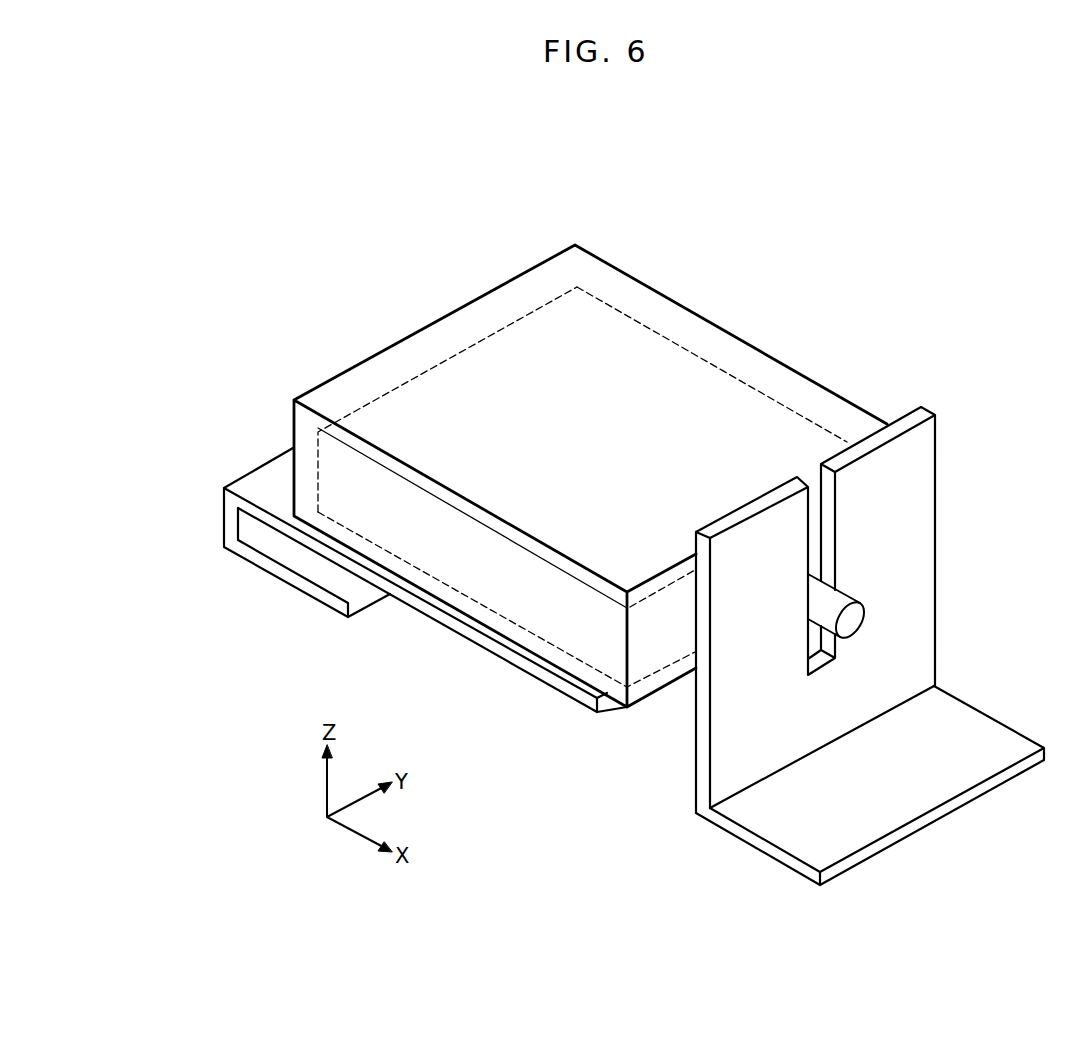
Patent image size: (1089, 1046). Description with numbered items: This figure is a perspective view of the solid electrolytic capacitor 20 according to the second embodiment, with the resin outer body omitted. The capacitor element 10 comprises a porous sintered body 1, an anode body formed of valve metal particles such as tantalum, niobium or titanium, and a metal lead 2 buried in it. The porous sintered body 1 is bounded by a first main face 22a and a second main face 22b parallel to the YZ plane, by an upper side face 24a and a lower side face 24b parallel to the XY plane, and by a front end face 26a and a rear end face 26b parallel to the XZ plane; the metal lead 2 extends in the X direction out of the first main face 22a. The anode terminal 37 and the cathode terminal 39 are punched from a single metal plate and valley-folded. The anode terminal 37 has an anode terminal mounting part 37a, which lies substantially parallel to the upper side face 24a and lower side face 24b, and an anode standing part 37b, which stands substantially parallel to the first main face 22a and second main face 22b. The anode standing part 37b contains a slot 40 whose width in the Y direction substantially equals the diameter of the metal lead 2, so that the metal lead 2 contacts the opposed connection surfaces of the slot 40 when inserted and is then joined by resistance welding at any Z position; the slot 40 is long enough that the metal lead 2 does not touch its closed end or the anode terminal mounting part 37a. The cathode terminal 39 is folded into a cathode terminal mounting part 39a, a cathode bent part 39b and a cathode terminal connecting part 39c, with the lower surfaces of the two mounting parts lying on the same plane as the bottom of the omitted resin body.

The porous sintered body 1 is at (738, 408).
The metal lead 2 is at (855, 619).
The capacitor element 10 is at (709, 351).
The solid electrolytic capacitor 20 is at (403, 294).
The first main face 22a is at (663, 645).
The second main face 22b is at (538, 302).
The upper side face 24a is at (443, 497).
The lower side face 24b is at (503, 618).
The front end face 26a is at (557, 632).
The rear end face 26b is at (817, 422).
The anode terminal 37 is at (616, 790).
The anode terminal mounting part 37a is at (745, 811).
The anode standing part 37b is at (725, 753).
The cathode terminal 39 is at (128, 466).
The cathode terminal mounting part 39a is at (247, 553).
The cathode bent part 39b is at (232, 502).
The cathode terminal connecting part 39c is at (273, 477).
The slot 40 is at (816, 548).